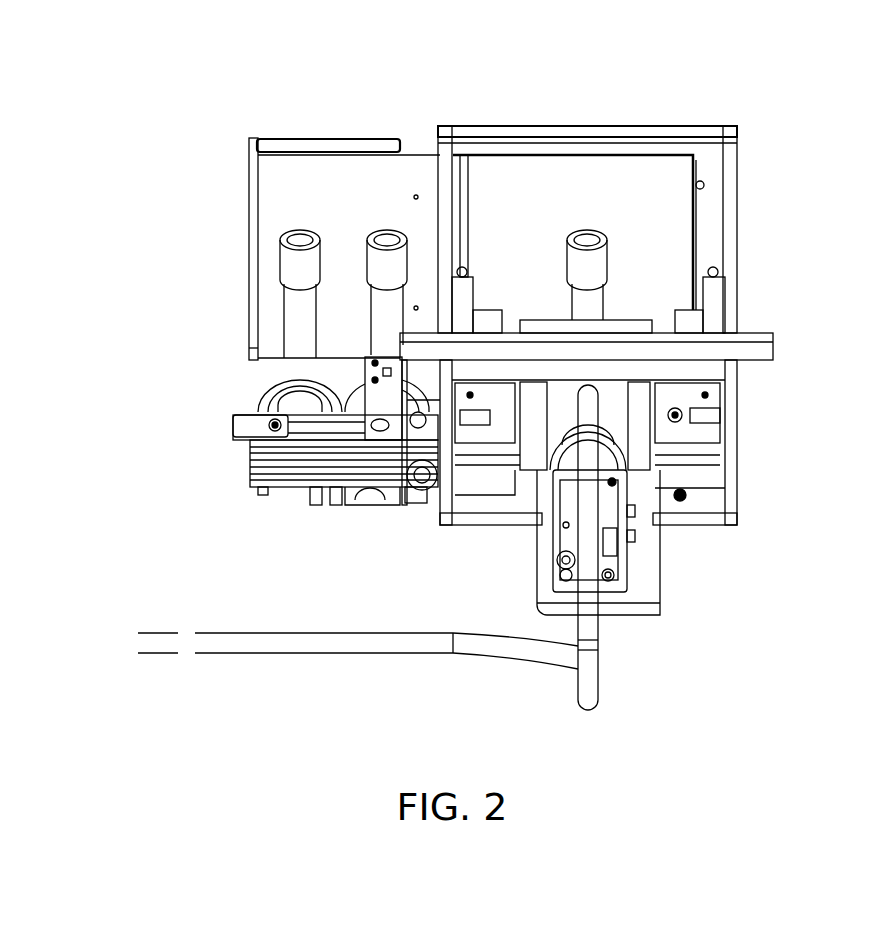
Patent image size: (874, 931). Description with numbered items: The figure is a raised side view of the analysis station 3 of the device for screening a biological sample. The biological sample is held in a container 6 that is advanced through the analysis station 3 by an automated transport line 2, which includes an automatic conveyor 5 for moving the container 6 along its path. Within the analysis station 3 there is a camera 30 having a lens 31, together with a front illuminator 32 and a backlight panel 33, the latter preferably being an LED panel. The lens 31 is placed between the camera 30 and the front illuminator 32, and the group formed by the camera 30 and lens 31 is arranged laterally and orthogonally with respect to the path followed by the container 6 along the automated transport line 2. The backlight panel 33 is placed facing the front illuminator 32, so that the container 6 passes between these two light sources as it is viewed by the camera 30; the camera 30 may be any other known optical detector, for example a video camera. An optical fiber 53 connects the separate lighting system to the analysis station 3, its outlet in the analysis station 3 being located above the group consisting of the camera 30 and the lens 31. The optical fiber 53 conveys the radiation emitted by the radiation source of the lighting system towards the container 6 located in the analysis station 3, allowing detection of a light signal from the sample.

The automated transport line 2 is at (180, 460).
The analysis station 3 is at (158, 126).
The automatic conveyor 5 is at (308, 468).
The container 6 is at (590, 308).
The camera 30 is at (568, 502).
The lens 31 is at (605, 440).
The front illuminator 32 is at (530, 325).
The backlight panel 33 is at (596, 195).
The optical fiber 53 is at (352, 642).